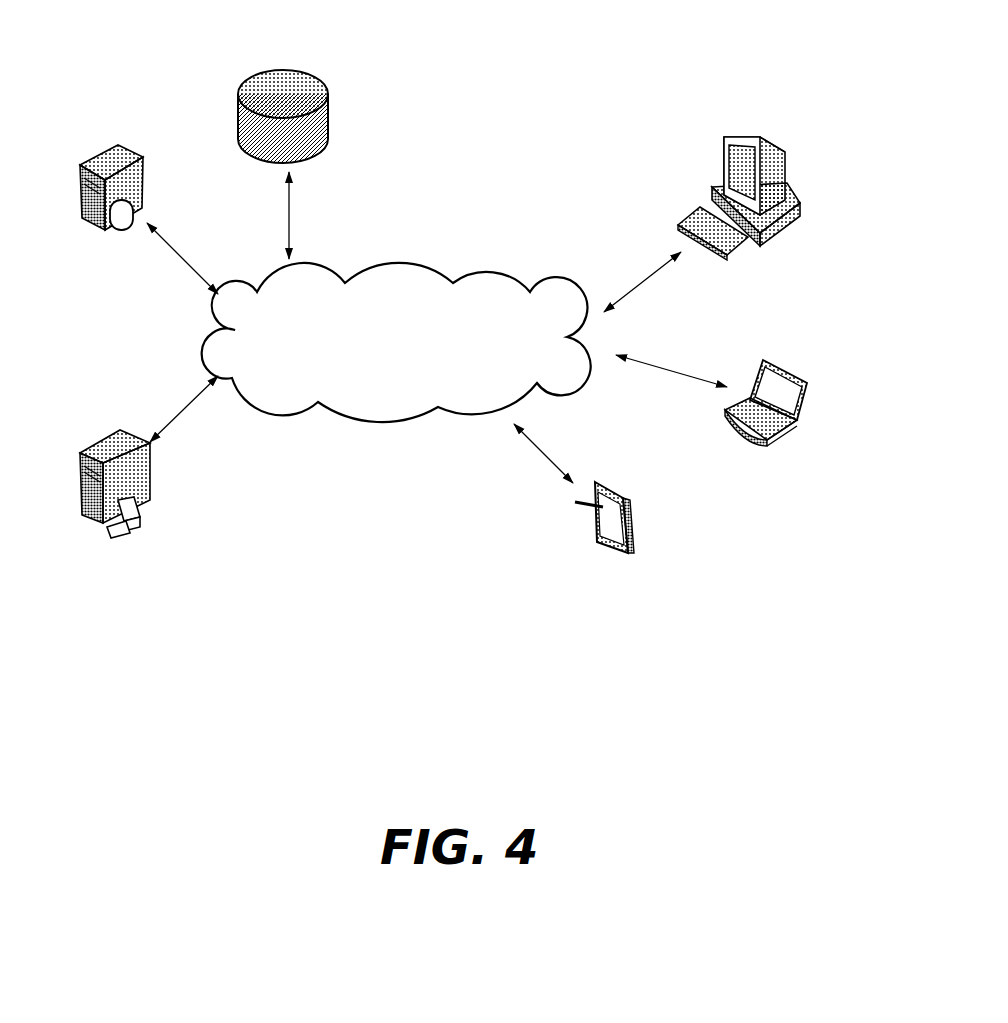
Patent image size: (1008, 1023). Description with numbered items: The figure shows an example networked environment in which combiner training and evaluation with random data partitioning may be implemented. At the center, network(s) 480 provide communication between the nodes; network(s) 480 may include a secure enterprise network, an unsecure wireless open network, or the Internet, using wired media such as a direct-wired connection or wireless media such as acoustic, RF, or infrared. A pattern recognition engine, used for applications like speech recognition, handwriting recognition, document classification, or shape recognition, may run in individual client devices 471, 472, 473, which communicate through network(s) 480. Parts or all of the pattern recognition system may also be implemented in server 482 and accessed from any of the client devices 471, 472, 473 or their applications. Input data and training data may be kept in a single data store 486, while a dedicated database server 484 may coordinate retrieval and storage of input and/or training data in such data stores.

The network(s) 480 is at (398, 247).
The data store 486 is at (299, 46).
The database server 484 is at (118, 234).
The server 482 is at (117, 539).
The client device 471 is at (774, 136).
The client device 472 is at (808, 360).
The client device 473 is at (623, 477).